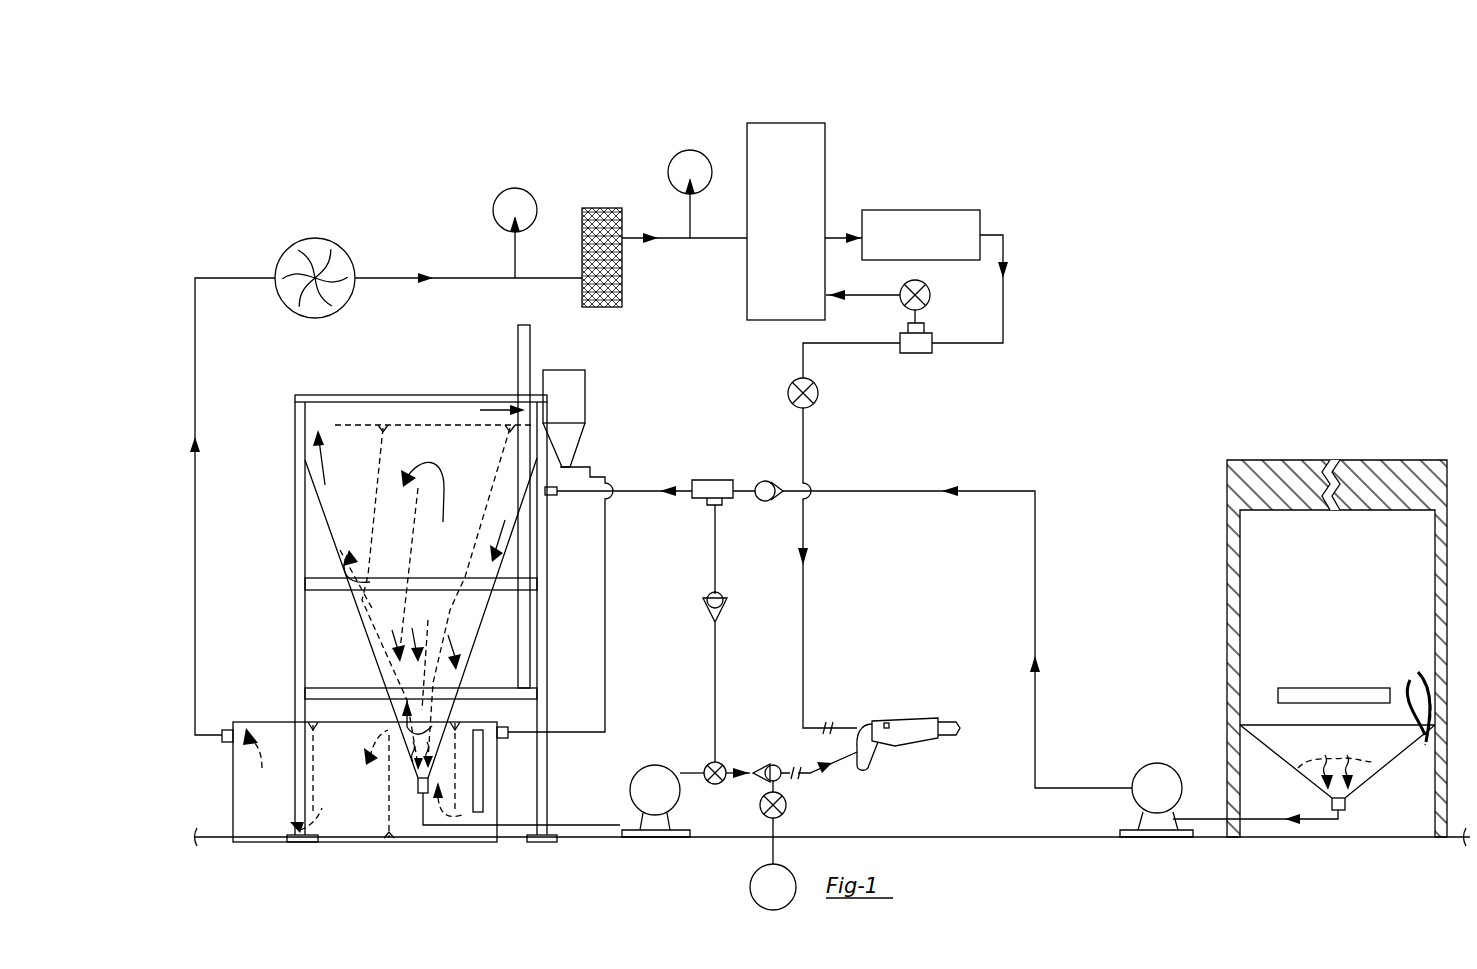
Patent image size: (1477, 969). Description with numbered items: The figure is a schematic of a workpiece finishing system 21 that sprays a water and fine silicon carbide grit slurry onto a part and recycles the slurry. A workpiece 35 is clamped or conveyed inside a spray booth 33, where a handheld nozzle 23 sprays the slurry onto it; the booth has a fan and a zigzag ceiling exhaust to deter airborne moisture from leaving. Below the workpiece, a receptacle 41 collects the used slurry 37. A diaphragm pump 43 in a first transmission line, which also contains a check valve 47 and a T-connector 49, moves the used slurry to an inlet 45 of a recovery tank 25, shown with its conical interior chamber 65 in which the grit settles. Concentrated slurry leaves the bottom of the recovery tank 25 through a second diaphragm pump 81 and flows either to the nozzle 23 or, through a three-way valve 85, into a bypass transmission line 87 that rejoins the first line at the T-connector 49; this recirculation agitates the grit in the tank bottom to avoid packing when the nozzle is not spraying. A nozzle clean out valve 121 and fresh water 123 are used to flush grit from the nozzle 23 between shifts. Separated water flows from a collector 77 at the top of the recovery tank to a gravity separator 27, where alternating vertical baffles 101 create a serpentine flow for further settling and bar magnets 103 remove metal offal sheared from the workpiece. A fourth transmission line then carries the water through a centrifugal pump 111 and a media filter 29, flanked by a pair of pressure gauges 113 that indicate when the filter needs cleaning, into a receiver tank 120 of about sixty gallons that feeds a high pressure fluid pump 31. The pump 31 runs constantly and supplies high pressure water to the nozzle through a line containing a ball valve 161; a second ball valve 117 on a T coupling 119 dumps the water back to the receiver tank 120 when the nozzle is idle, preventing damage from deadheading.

The workpiece finishing system 21 is at (1185, 362).
The nozzle 23 is at (905, 725).
The recovery tank 25 is at (397, 400).
The gravity separator 27 is at (253, 822).
The media filter 29 is at (602, 208).
The high pressure fluid pump 31 is at (906, 232).
The spray booth 33 is at (1243, 480).
The workpiece 35 is at (1333, 697).
The used slurry 37 is at (1315, 770).
The receptacle 41 is at (1378, 755).
The diaphragm pump 43 is at (1164, 803).
The inlet 45 is at (550, 495).
The check valve 47 is at (762, 488).
The T-connector 49 is at (714, 488).
The conical chamber 65 is at (455, 425).
The collector 77 is at (567, 400).
The diaphragm pump 81 is at (655, 790).
The three-way valve 85 is at (722, 770).
The bypass transmission line 87 is at (715, 680).
The baffles 101 is at (389, 797).
The bar magnets 103 is at (480, 793).
The centrifugal pump 111 is at (308, 240).
The pressure gauges 113 is at (512, 198).
The ball valve 117 is at (928, 291).
The T coupling 119 is at (913, 350).
The receiver tank 120 is at (825, 160).
The nozzle clean out valve 121 is at (788, 802).
The fresh water 123 is at (770, 885).
The ball valve 161 is at (818, 393).